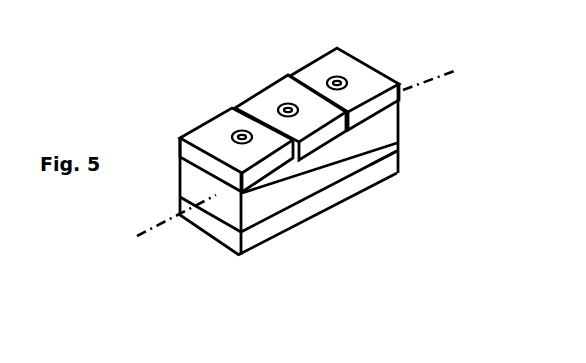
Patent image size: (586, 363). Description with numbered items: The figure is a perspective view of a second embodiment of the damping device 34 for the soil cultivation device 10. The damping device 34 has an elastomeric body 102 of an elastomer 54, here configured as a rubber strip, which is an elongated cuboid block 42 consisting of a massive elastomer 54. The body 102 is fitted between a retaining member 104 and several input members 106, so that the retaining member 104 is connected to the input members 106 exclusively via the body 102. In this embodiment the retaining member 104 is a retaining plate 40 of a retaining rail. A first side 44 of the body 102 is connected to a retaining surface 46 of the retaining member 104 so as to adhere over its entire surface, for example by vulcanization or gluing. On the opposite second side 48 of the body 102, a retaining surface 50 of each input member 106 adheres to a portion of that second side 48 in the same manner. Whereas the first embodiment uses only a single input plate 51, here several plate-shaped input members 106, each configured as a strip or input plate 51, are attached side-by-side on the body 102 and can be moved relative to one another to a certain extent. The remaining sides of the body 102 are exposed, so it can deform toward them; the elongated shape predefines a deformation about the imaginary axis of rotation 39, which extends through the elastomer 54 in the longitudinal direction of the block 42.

The coupling module 10 is at (180, 136).
The input member 106 is at (241, 95).
The input plate 51 is at (201, 128).
The retaining surface 50 is at (300, 166).
The damping device 34 is at (405, 63).
The axis of rotation 39 is at (156, 238).
The block 42 is at (392, 124).
The retaining surface 46 is at (366, 172).
The retaining member 104 is at (350, 196).
The elastomeric body 102 is at (330, 172).
The first side 44 is at (305, 209).
The retaining plate 40 is at (270, 229).
The second side 48 is at (272, 176).
The elastomer 54 is at (204, 226).